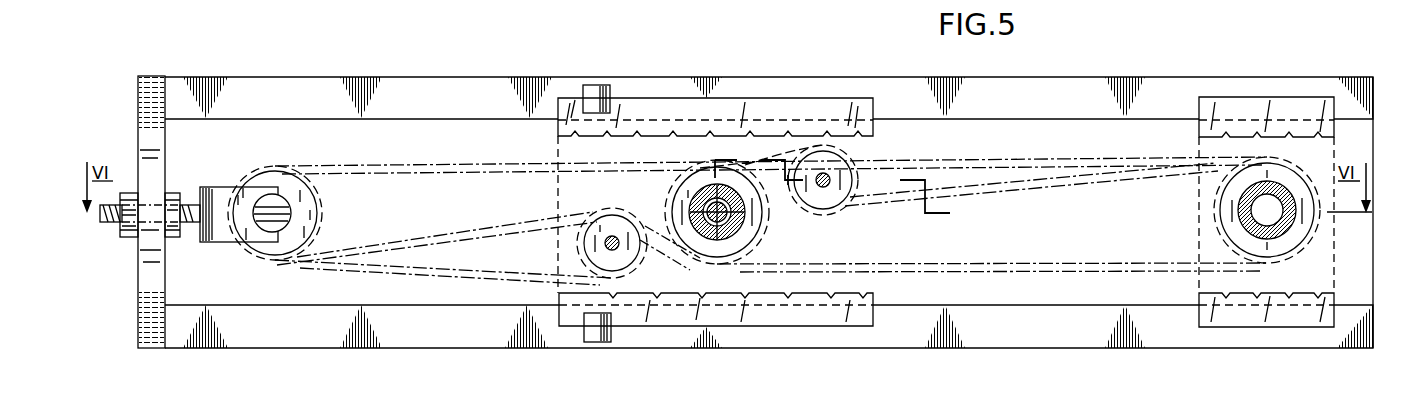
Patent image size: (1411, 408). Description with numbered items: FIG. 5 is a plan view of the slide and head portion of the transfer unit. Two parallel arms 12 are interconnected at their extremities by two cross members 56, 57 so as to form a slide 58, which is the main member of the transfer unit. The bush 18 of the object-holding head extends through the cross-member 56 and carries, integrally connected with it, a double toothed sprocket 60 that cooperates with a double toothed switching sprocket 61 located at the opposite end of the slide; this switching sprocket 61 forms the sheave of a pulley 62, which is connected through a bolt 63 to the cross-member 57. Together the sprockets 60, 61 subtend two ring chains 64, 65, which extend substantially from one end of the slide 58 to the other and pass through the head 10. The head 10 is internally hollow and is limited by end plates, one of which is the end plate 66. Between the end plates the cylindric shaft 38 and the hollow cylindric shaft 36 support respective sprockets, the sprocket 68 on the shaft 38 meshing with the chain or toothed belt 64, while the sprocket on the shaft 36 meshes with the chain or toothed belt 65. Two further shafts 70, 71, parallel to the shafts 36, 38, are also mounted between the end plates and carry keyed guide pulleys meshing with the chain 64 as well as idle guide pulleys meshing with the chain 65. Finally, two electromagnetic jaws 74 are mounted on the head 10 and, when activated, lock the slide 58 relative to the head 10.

The head 10 is at (879, 109).
The arms 12 is at (1122, 84).
The bush 18 is at (1240, 207).
The hollow cylindric shaft 36 is at (712, 237).
The cylindric shaft 38 is at (738, 223).
The cross-member 56 is at (1315, 278).
The cross-member 57 is at (147, 112).
The slide 58 is at (882, 350).
The double toothed sprocket 60 is at (1293, 188).
The double toothed switching sprocket 61 is at (262, 180).
The pulley 62 is at (208, 175).
The bolt 63 is at (112, 226).
The ring chain 64 is at (407, 237).
The ring chain 65 is at (467, 277).
The end plate 66 is at (773, 107).
The sprocket 68 is at (752, 220).
The shaft 70 is at (604, 250).
The shaft 71 is at (820, 173).
The electromagnetic jaws 74 is at (600, 97).